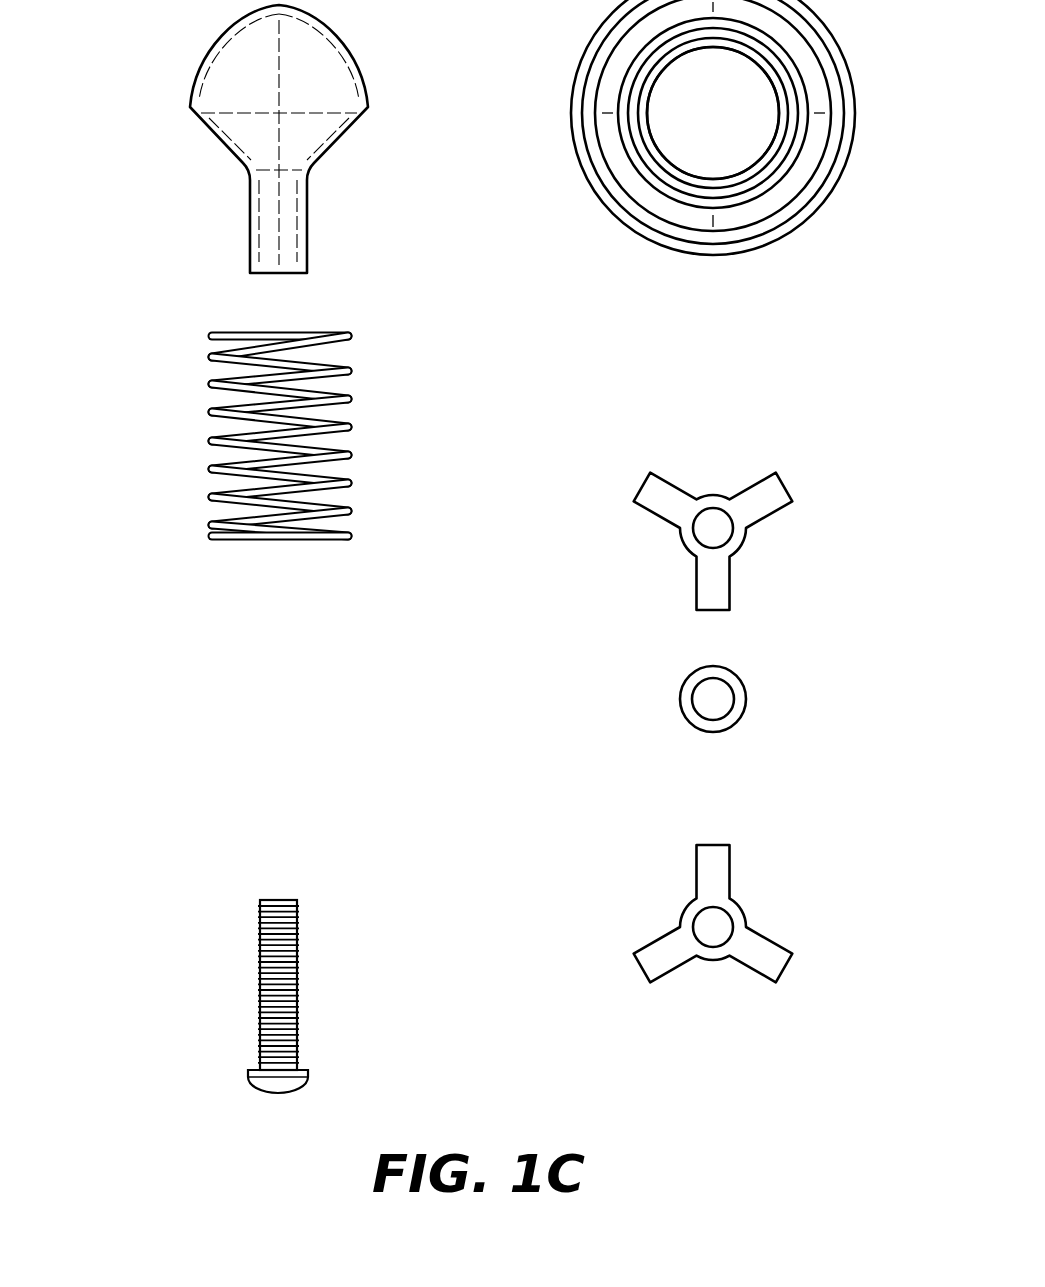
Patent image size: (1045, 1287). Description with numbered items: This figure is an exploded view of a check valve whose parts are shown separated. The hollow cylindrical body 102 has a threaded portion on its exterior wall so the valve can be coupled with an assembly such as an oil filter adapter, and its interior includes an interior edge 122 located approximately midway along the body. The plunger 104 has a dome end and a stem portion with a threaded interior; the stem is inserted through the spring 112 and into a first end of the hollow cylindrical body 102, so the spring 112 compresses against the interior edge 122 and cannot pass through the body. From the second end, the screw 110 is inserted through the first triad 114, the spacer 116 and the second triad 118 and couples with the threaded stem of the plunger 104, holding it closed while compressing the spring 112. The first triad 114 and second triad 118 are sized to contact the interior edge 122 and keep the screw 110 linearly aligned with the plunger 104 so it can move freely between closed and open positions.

The hollow cylindrical body 102 is at (843, 70).
The plunger 104 is at (210, 100).
The screw 110 is at (258, 985).
The spring 112 is at (210, 393).
The first triad 114 is at (775, 492).
The spacer 116 is at (738, 684).
The second triad 118 is at (768, 957).
The interior edge 122 is at (652, 82).